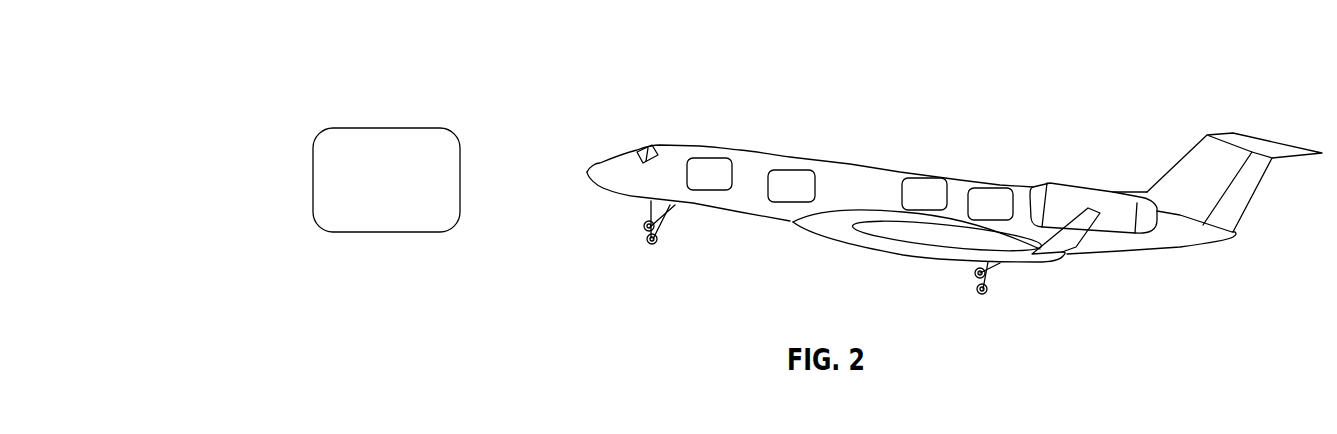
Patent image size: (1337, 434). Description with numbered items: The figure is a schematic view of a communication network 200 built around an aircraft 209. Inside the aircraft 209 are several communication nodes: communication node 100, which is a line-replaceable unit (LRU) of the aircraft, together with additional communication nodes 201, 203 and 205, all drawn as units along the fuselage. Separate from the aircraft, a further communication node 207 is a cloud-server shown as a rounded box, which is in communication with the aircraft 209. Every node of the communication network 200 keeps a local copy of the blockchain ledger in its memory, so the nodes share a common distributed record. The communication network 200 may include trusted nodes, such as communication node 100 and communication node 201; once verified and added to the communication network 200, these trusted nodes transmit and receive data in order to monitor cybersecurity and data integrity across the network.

The communication network 200 is at (322, 47).
The communication node 207 is at (407, 194).
The aircraft 209 is at (747, 197).
The communication node 100 is at (710, 167).
The communication node 201 is at (790, 178).
The communication node 203 is at (923, 187).
The communication node 205 is at (990, 197).